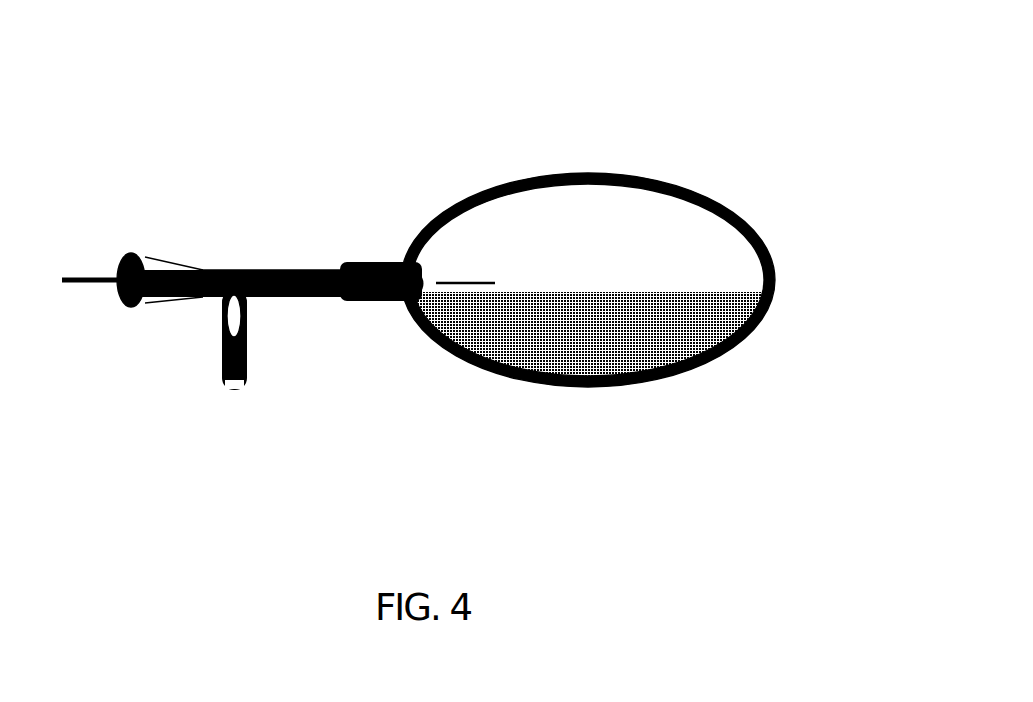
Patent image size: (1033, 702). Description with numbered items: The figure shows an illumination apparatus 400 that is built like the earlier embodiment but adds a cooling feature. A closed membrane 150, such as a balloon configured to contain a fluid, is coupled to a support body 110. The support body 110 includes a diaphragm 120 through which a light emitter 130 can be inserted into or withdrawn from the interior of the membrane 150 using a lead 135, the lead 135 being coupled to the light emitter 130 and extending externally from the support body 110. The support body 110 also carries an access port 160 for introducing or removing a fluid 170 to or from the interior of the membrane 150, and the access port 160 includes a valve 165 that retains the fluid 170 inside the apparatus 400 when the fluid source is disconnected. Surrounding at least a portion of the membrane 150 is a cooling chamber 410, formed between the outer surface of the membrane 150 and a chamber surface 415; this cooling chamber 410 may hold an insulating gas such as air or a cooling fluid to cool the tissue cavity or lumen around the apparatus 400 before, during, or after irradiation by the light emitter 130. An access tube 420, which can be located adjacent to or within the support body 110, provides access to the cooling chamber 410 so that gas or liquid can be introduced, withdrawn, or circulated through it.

The apparatus 400 is at (705, 103).
The support body 110 is at (358, 300).
The diaphragm 120 is at (128, 247).
The light emitter 130 is at (472, 265).
The lead 135 is at (258, 270).
The membrane 150 is at (722, 343).
The access port 160 is at (247, 360).
The valve 165 is at (220, 328).
The fluid 170 is at (628, 317).
The cooling chamber 410 is at (733, 220).
The chamber surface 415 is at (775, 265).
The access tube 420 is at (352, 255).